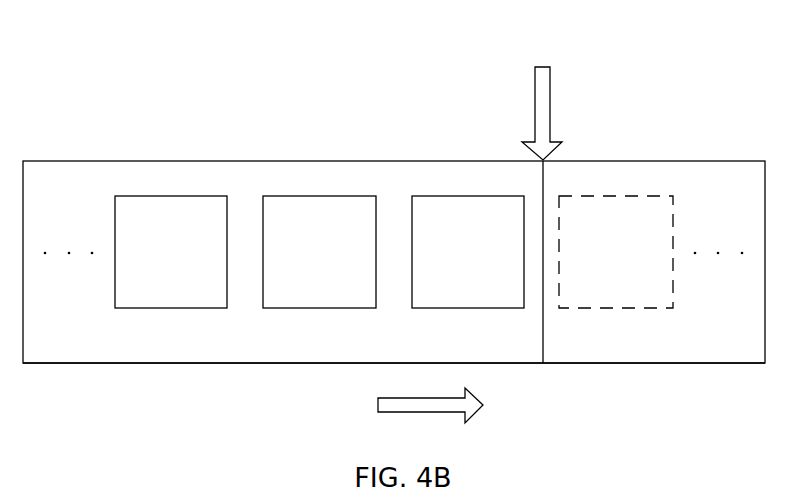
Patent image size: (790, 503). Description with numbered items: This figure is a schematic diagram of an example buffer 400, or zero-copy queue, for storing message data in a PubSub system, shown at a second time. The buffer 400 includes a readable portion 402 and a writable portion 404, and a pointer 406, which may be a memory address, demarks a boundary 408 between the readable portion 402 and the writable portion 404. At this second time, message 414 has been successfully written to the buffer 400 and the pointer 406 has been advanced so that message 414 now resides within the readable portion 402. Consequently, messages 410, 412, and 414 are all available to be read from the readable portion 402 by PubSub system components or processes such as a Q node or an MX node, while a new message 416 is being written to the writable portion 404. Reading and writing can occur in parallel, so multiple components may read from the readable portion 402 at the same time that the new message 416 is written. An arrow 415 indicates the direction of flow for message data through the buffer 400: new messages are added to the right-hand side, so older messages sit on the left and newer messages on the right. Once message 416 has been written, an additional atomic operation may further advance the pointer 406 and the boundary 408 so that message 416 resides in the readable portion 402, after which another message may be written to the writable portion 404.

The buffer 400 is at (684, 65).
The readable portion 402 is at (292, 348).
The writable portion 404 is at (635, 345).
The pointer 406 is at (540, 65).
The boundary 408 is at (543, 332).
The message 410 is at (154, 263).
The message 412 is at (302, 263).
The message 414 is at (450, 263).
The arrow 415 is at (378, 404).
The new message 416 is at (599, 263).